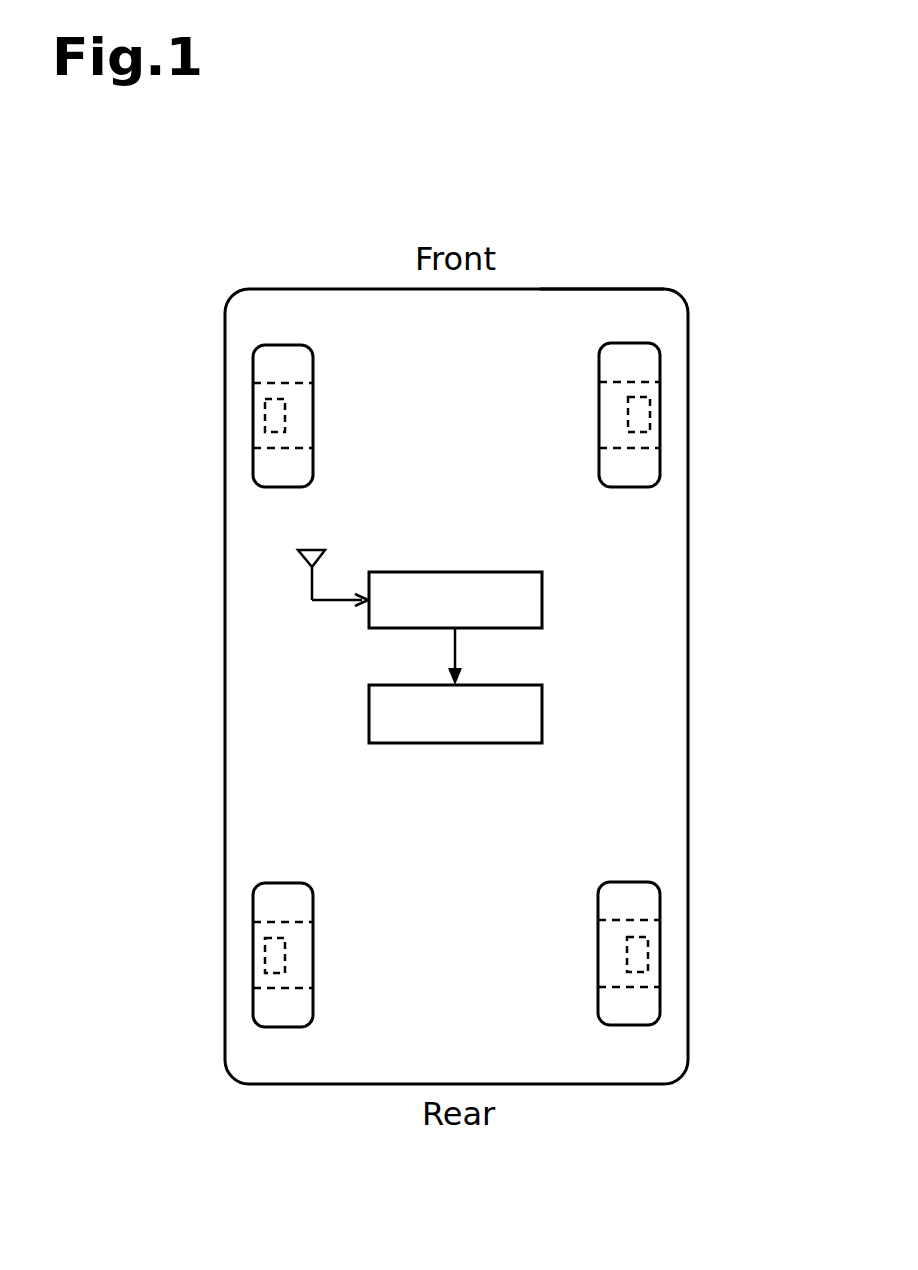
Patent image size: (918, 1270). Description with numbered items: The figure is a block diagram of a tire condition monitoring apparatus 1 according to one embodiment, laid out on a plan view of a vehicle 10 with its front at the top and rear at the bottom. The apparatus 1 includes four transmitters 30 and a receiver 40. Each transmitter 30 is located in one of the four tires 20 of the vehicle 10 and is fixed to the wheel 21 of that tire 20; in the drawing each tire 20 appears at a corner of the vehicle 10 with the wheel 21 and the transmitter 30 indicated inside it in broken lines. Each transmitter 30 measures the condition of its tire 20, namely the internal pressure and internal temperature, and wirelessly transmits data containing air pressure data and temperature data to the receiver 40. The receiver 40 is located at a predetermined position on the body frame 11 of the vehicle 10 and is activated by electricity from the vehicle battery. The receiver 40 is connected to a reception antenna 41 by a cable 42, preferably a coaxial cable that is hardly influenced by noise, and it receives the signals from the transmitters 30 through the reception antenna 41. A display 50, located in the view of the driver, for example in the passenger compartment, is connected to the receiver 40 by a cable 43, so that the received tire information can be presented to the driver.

The tire condition monitoring apparatus 1 is at (519, 626).
The vehicle 10 is at (369, 289).
The body frame 11 is at (587, 289).
The tire 20 is at (265, 368).
The wheel 21 is at (275, 452).
The transmitter 30 is at (263, 413).
The receiver 40 is at (542, 598).
The reception antenna 41 is at (304, 558).
The cable 42 is at (325, 601).
The cable 43 is at (456, 655).
The display 50 is at (542, 712).